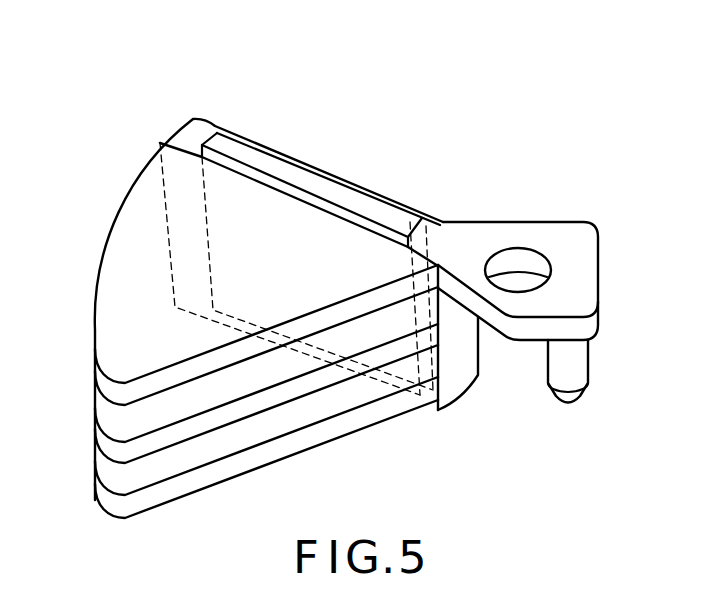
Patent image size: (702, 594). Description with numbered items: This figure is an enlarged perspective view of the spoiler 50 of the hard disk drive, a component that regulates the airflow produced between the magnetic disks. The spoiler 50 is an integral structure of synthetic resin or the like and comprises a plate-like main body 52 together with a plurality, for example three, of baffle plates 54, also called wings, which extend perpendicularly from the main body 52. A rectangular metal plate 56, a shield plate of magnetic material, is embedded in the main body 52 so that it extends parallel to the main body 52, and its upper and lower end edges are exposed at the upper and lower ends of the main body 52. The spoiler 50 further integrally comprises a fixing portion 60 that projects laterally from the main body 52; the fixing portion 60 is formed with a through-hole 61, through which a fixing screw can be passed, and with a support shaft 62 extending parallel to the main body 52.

The spoiler 50 is at (170, 86).
The main body 52 is at (433, 229).
The baffle plates 54 is at (100, 318).
The metal plate 56 is at (299, 172).
The fixing portion 60 is at (590, 251).
The through-hole 61 is at (517, 260).
The support shaft 62 is at (582, 362).